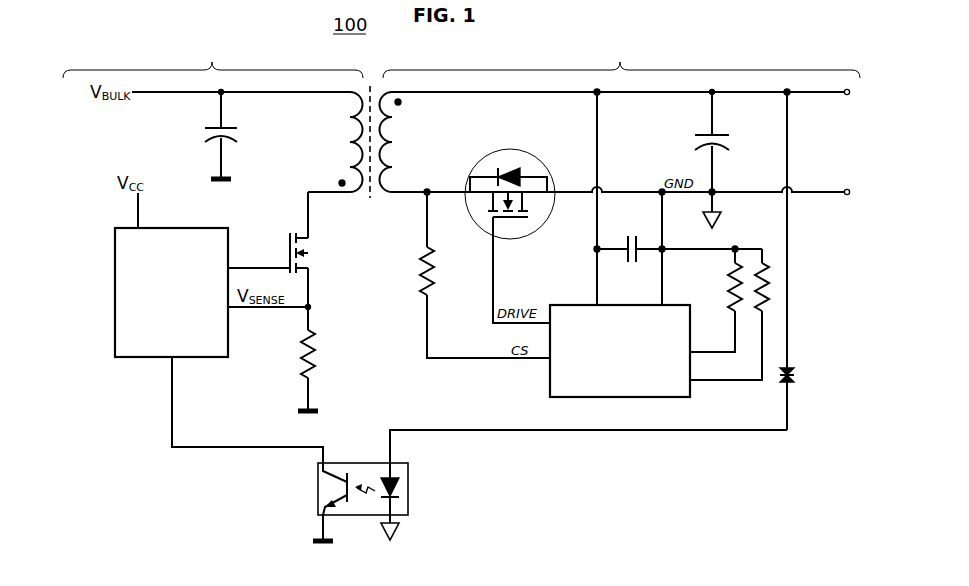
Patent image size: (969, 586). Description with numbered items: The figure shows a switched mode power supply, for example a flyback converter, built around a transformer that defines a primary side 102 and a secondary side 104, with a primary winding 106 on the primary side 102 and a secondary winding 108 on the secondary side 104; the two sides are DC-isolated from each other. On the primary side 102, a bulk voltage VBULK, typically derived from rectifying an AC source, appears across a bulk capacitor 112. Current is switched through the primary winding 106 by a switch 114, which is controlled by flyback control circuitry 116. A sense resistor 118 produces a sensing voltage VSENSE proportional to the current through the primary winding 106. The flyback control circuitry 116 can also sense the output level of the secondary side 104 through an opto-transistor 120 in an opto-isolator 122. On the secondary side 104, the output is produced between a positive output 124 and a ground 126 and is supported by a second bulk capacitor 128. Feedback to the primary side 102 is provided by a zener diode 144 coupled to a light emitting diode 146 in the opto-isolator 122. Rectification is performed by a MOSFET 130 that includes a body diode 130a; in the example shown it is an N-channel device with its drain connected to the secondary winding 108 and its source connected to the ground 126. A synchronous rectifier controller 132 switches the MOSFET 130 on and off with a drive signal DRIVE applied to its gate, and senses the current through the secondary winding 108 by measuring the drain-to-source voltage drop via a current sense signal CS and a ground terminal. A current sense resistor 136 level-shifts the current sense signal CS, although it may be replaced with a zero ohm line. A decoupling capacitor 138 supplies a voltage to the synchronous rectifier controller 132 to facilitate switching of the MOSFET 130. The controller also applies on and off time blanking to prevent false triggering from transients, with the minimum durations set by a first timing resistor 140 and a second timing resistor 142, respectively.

The primary side 102 is at (213, 56).
The secondary side 104 is at (621, 58).
The primary winding 106 is at (345, 142).
The secondary winding 108 is at (398, 143).
The bulk capacitor 112 is at (213, 127).
The switch 114 is at (284, 240).
The flyback control circuitry 116 is at (115, 278).
The sense resistor 118 is at (318, 348).
The opto-transistor 120 is at (340, 487).
The opto-isolator 122 is at (362, 462).
The positive output 124 is at (846, 94).
The ground 126 is at (846, 194).
The bulk capacitor 128 is at (703, 134).
The MOSFET 130 is at (525, 150).
The body diode 130a is at (509, 150).
The synchronous rectifier controller 132 is at (550, 380).
The current sense resistor 136 is at (420, 270).
The decoupling capacitor 138 is at (645, 237).
The first timing resistor 140 is at (731, 275).
The second timing resistor 142 is at (770, 275).
The zener diode 144 is at (792, 372).
The light emitting diode 146 is at (400, 488).